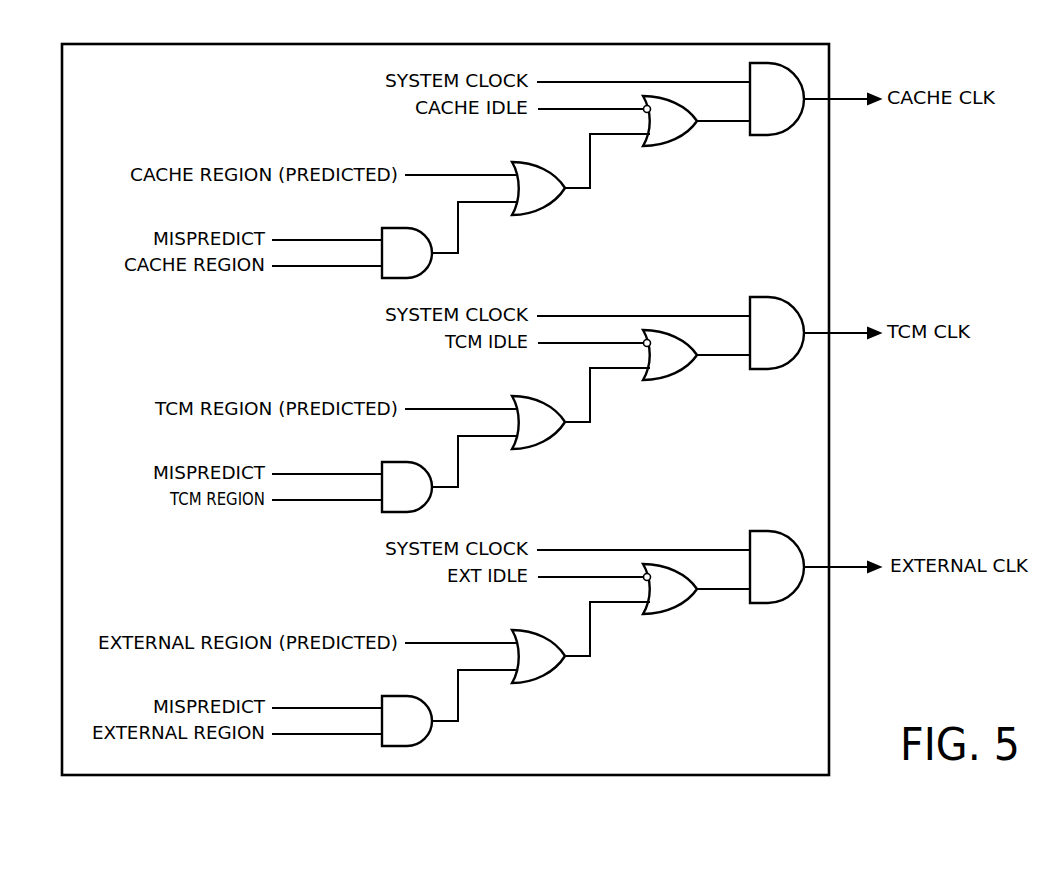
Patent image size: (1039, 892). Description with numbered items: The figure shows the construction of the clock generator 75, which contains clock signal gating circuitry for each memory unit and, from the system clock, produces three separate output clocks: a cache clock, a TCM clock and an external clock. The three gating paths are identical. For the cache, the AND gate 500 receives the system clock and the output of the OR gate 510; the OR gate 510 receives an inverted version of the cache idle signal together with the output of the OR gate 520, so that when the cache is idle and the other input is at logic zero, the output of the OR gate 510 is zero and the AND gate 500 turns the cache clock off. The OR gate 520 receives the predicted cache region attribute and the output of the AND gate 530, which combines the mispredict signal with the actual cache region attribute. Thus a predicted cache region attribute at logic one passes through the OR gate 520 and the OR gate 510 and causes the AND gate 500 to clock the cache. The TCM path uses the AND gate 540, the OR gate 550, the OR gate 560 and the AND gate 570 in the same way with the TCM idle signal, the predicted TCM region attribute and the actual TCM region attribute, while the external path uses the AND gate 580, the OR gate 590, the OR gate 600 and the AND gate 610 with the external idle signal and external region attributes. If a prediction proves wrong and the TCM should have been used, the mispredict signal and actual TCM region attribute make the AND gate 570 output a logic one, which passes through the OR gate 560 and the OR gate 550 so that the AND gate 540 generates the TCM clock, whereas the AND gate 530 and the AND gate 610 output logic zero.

The clock generator 75 is at (62, 48).
The AND gate 500 is at (766, 136).
The OR gate 510 is at (656, 147).
The OR gate 520 is at (522, 216).
The AND gate 530 is at (421, 227).
The AND gate 540 is at (766, 370).
The OR gate 550 is at (656, 381).
The OR gate 560 is at (522, 450).
The AND gate 570 is at (421, 461).
The AND gate 580 is at (766, 604).
The OR gate 590 is at (656, 615).
The OR gate 600 is at (522, 684).
The AND gate 610 is at (421, 695).